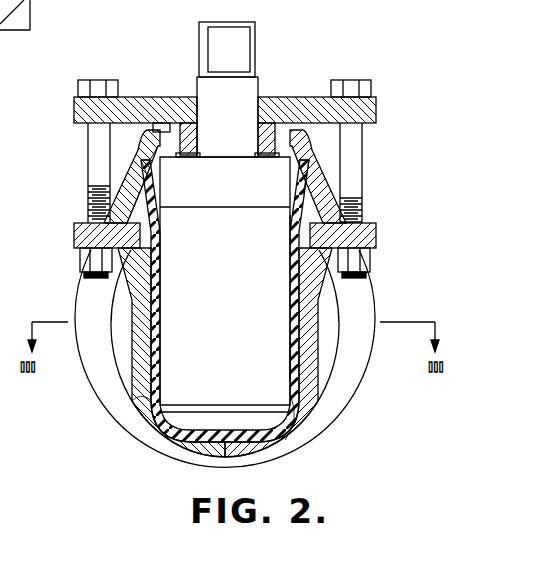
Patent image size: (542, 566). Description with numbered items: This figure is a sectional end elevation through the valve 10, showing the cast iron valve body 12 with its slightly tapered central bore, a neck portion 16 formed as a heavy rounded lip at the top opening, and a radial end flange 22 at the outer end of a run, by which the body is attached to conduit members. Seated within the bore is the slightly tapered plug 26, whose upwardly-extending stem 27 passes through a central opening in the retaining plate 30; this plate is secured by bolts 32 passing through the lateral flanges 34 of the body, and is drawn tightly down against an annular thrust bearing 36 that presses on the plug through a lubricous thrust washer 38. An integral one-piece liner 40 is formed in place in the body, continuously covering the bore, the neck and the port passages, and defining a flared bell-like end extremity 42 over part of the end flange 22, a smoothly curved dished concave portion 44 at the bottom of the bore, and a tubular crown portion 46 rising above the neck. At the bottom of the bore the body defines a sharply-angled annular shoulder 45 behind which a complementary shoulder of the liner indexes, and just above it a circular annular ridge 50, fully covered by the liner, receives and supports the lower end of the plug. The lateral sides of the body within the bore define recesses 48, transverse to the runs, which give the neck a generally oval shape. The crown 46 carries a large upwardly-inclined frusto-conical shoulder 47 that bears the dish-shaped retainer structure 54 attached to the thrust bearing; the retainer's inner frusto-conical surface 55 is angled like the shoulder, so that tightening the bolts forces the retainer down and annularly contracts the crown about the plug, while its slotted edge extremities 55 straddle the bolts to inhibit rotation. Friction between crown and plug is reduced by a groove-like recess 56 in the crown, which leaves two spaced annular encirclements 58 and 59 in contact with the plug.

The valve 10 is at (292, 88).
The valve body 12 is at (310, 322).
The neck portion 16 is at (156, 240).
The radial end flange 22 is at (90, 298).
The plug 26 is at (225, 281).
The stem 27 is at (227, 89).
The retaining plate 30 is at (162, 106).
The bolts 32 is at (100, 85).
The lateral flanges 34 is at (88, 238).
The annular thrust bearing 36 is at (266, 135).
The thrust washer 38 is at (260, 157).
The liner 40 is at (287, 367).
The flared end extremity 42 is at (0, 548).
The dished concave portion 44 is at (205, 440).
The annular shoulder 45 is at (292, 397).
The crown portion 46 is at (320, 183).
The frusto-conical shoulder 47 is at (145, 200).
The recesses 48 is at (300, 298).
The annular ridge 50 is at (155, 392).
The retainer structure 54 is at (140, 158).
The inner frusto-conical surface 55 is at (150, 168).
The groove-like recess 56 is at (296, 198).
The annular encirclement 58 is at (303, 195).
The annular encirclement 59 is at (290, 223).